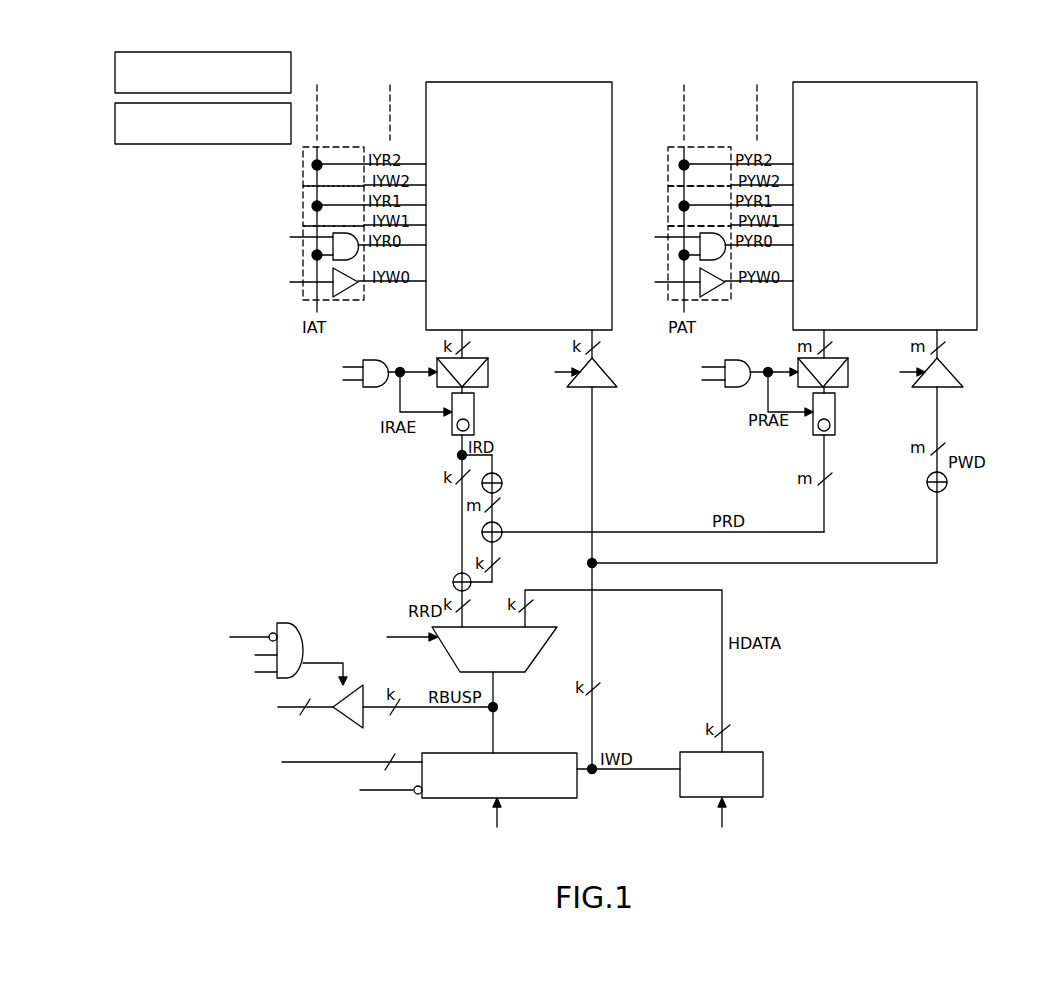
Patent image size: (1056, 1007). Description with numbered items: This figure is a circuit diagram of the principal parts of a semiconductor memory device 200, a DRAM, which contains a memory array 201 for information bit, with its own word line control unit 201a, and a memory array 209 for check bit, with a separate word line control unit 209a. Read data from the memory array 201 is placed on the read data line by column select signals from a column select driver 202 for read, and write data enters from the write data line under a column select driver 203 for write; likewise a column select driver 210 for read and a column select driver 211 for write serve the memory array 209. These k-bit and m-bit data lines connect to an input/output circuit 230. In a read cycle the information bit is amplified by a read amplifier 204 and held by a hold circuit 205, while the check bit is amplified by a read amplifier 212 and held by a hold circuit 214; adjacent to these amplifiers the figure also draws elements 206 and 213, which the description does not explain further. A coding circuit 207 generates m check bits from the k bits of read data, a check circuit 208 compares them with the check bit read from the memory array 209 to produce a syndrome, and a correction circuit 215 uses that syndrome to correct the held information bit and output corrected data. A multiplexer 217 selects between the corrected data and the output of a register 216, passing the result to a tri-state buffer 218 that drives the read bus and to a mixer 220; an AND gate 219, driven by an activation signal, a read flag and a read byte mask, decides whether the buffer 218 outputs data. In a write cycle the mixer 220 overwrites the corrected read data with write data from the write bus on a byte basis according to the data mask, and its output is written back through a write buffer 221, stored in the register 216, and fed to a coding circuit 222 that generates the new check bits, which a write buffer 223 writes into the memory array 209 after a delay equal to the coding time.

The semiconductor memory device 200 is at (1043, 74).
The memory array for information bit 201 is at (440, 95).
The word line control unit 201a is at (113, 76).
The column select driver for read 202 is at (333, 240).
The column select driver for write 203 is at (333, 275).
The read amplifier 204 is at (437, 359).
The hold circuit 205 is at (452, 424).
The AND gate generating IRAE 206 is at (363, 387).
The coding circuit 207 is at (503, 483).
The check circuit 208 is at (503, 532).
The memory array for check bit 209 is at (812, 93).
The word line control unit 209a is at (113, 127).
The column select driver for read 210 is at (700, 240).
The column select driver for write 211 is at (700, 275).
The read amplifier 212 is at (798, 358).
The AND gate generating PRAE 213 is at (725, 382).
The hold circuit 214 is at (813, 428).
The correction circuit 215 is at (453, 582).
The register 216 is at (763, 765).
The multiplexer 217 is at (432, 628).
The tri-state buffer 218 is at (340, 712).
The AND gate 219 is at (277, 624).
The mixer 220 is at (522, 752).
The write buffer 221 is at (578, 386).
The coding circuit 222 is at (947, 485).
The write buffer 223 is at (963, 385).
The input/output circuit 230 is at (290, 508).